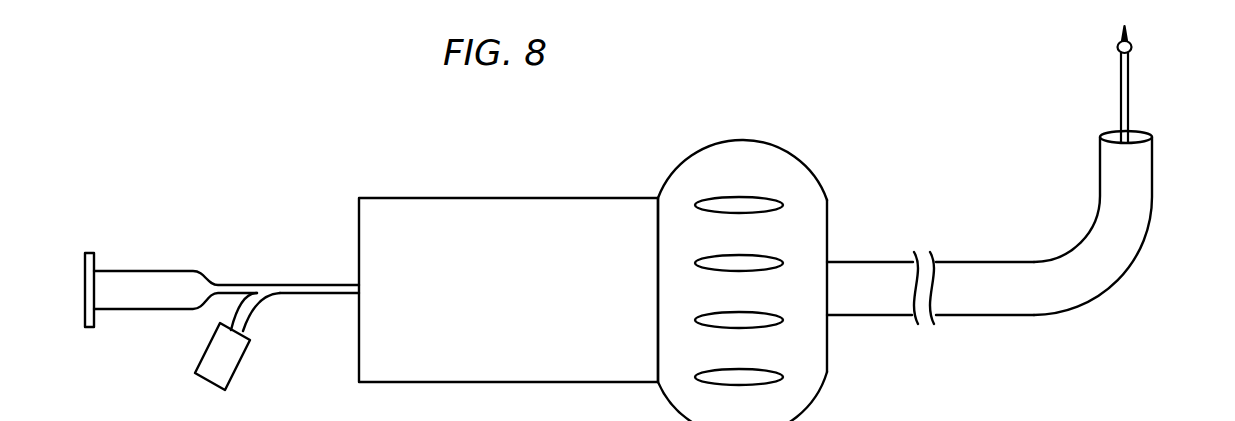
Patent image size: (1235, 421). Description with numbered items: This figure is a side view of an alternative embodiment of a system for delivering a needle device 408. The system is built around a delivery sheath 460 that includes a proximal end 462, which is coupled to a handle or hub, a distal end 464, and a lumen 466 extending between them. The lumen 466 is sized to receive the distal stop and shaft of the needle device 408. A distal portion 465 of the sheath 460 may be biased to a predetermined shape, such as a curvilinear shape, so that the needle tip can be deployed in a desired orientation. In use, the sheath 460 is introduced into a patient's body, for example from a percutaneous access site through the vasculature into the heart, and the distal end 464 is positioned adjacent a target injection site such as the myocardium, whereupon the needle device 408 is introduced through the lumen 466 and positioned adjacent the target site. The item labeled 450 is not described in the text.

The needle device 408 is at (1140, 90).
The inlet handle assembly with branch and connector 450 is at (260, 283).
The delivery sheath 460 is at (783, 145).
The proximal end 462 is at (868, 262).
The distal end 464 is at (1092, 197).
The distal portion 465 is at (985, 327).
The lumen 466 is at (1112, 130).